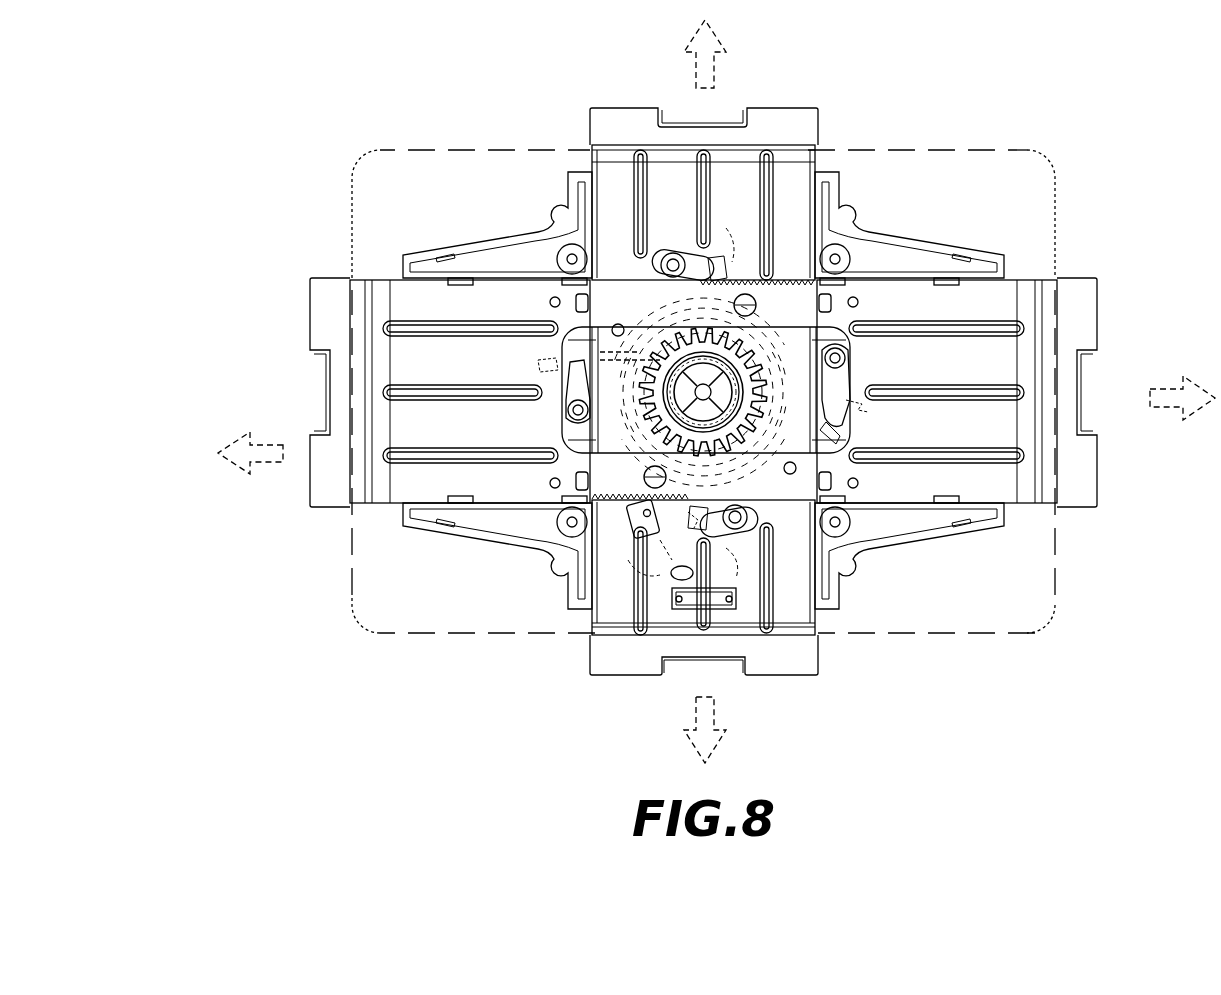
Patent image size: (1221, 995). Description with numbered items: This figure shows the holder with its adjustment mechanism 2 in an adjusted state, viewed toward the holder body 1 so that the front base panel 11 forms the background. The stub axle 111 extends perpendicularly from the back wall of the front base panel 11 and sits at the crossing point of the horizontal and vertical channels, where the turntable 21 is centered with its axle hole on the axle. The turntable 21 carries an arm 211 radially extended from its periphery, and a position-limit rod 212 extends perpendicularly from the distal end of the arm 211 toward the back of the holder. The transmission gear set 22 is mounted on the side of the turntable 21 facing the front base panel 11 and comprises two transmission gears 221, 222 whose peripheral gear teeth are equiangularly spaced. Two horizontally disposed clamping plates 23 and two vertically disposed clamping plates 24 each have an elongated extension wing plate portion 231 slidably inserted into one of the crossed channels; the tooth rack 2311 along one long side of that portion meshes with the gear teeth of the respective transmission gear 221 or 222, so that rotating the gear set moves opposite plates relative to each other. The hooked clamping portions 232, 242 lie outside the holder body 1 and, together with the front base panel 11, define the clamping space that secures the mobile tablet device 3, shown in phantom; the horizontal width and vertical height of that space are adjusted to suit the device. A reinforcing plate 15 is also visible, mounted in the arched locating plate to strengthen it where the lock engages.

The holder body 1 is at (549, 432).
The front base panel 11 is at (530, 548).
The stub axle 111 is at (658, 398).
The reinforcing plate 15 is at (697, 605).
The adjustment mechanism 2 is at (706, 402).
The turntable 21 is at (679, 625).
The arm 211 is at (602, 672).
The position-limit rod 212 is at (648, 690).
The transmission gear set 22 is at (549, 317).
The transmission gear 221 is at (598, 352).
The transmission gear 222 is at (575, 370).
The clamping plate 23 is at (706, 363).
The elongated extension wing plate portion 231 is at (652, 305).
The tooth rack 2311 is at (828, 335).
The hooked clamping portion 232 is at (330, 296).
The clamping plate 24 is at (797, 362).
The hooked clamping portion 242 is at (775, 122).
The mobile tablet device 3 is at (995, 150).